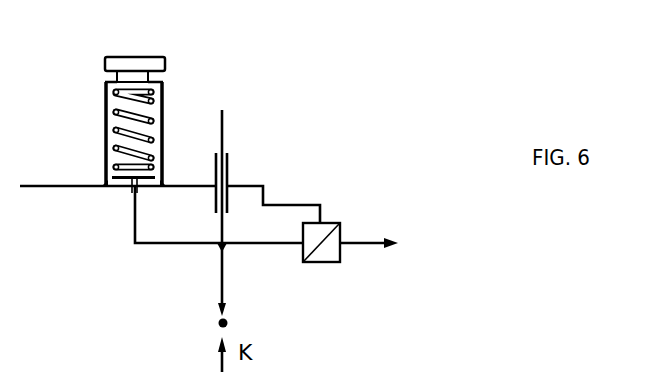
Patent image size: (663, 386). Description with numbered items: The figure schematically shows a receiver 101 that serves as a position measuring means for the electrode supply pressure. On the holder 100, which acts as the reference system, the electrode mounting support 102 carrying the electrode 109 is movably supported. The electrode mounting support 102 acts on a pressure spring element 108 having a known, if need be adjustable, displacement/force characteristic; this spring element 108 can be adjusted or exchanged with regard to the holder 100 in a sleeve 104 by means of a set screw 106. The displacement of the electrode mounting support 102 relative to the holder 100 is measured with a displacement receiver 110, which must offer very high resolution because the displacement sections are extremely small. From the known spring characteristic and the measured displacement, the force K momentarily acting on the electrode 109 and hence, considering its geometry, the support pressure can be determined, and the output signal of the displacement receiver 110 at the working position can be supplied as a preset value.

The holder 100 is at (53, 190).
The receiver 101 is at (255, 145).
The electrode mounting support 102 is at (222, 227).
The sleeve 104 is at (163, 113).
The set screw 106 is at (136, 62).
The pressure spring element 108 is at (108, 128).
The electrode 109 is at (218, 320).
The displacement receiver 110 is at (322, 263).